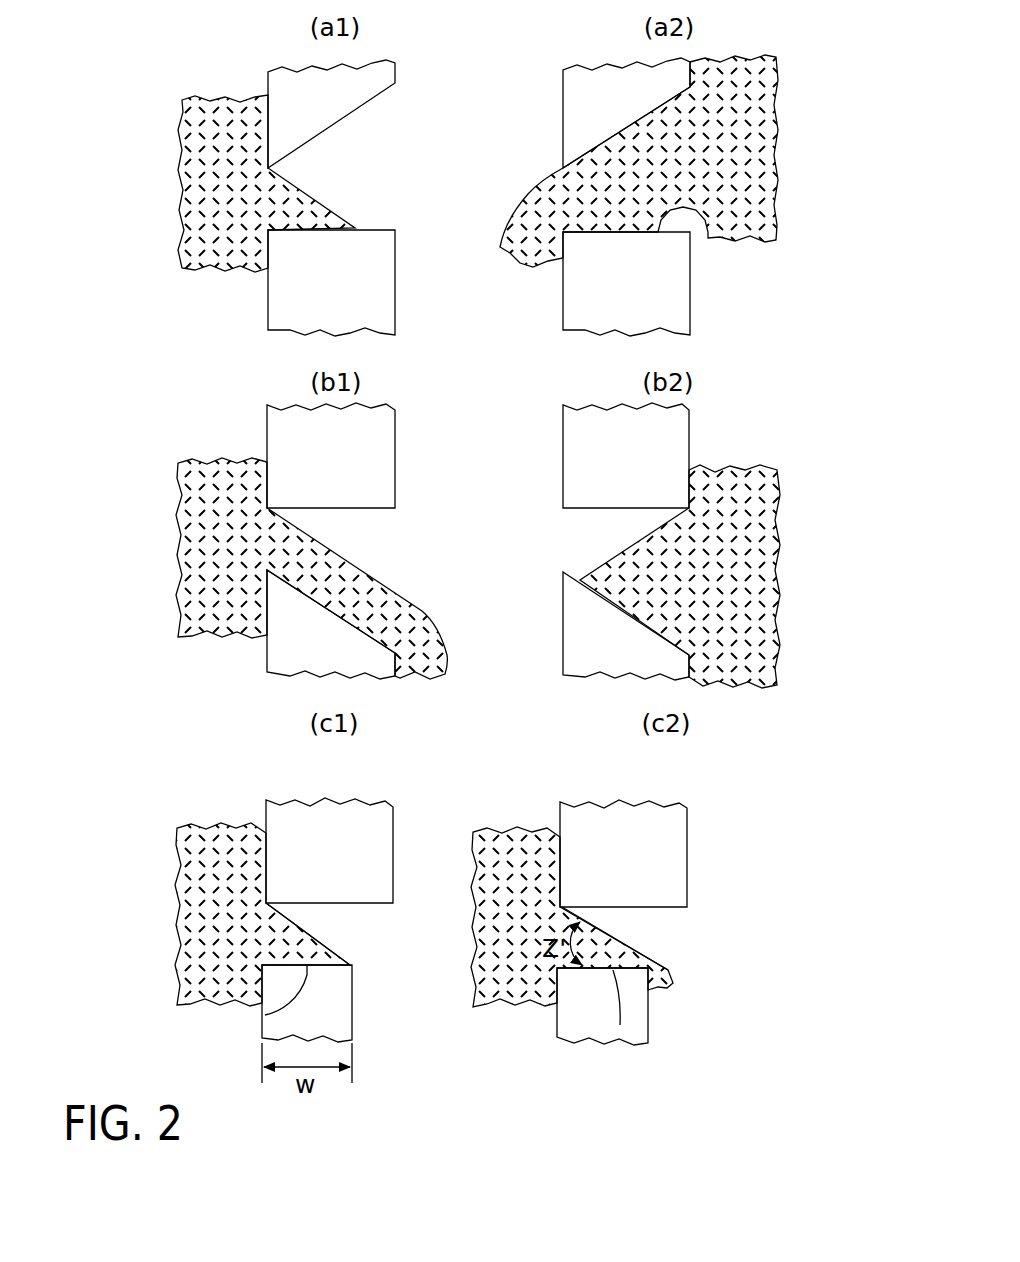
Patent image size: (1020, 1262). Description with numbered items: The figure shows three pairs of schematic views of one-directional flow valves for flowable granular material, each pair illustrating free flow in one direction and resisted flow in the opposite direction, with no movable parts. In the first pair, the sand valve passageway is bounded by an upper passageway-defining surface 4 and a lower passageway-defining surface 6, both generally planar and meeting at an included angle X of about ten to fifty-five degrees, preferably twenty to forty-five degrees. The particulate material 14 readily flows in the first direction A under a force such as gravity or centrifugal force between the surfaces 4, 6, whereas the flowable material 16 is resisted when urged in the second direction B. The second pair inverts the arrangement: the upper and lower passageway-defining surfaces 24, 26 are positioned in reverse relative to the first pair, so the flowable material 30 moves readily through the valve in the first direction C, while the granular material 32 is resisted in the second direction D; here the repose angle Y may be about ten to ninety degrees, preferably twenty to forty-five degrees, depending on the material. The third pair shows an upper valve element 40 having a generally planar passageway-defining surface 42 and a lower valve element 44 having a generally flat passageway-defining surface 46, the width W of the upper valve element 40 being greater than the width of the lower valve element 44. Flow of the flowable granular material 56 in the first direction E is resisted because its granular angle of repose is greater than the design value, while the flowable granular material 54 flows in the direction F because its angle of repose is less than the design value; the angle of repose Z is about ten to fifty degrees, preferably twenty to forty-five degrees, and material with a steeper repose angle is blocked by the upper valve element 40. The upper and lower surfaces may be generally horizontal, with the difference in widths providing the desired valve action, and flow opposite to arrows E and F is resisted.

The upper passageway-defining surface 4 is at (345, 117).
The lower passageway-defining surface 6 is at (365, 228).
The particulate material 14 is at (722, 162).
The flowable material 16 is at (248, 201).
The upper passageway-defining surface 24 is at (347, 607).
The lower passageway-defining surface 26 is at (350, 508).
The flowable material 30 is at (246, 554).
The granular material 32 is at (736, 555).
The upper valve element 40 is at (393, 838).
The passageway-defining surface 42 is at (352, 903).
The lower valve element 44 is at (352, 1010).
The passageway-defining surface 46 is at (265, 1015).
The flowable granular material 54 is at (531, 926).
The flowable granular material 56 is at (231, 915).
The first direction A is at (797, 173).
The second direction B is at (158, 173).
The first direction C is at (158, 563).
The second direction D is at (797, 563).
The first direction E is at (158, 900).
The flow direction F is at (780, 900).
The included angle X is at (323, 141).
The repose angle Y is at (632, 552).
The angle of repose Z is at (283, 924).
The width of upper valve element W is at (393, 795).